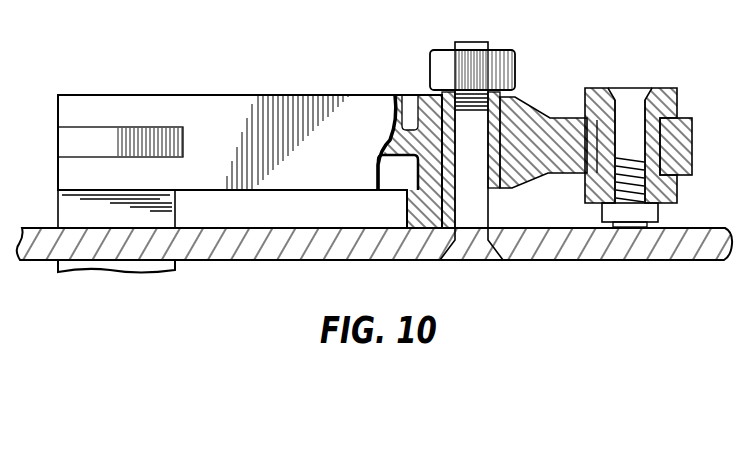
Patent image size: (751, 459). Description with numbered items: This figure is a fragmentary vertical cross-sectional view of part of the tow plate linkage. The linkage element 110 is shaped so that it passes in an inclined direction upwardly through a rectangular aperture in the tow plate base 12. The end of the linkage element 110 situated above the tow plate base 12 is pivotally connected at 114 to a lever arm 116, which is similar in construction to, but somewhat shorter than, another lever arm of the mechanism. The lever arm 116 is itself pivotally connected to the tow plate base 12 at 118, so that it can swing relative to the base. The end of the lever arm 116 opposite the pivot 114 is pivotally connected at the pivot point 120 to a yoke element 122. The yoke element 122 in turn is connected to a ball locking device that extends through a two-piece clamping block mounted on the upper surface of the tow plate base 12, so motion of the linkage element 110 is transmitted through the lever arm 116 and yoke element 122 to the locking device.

The tow plate base 12 is at (232, 240).
The linkage element 110 is at (88, 205).
The pivotal connection 114 is at (116, 95).
The lever arm 116 is at (275, 117).
The pivotal connection 118 is at (487, 43).
The pivot point 120 is at (638, 92).
The yoke element 122 is at (684, 116).